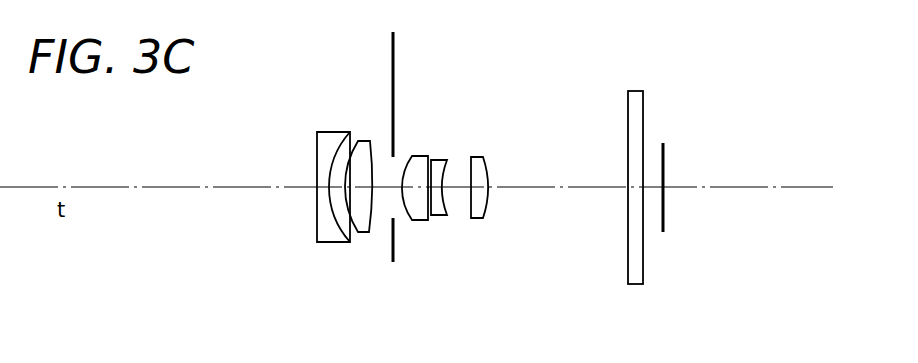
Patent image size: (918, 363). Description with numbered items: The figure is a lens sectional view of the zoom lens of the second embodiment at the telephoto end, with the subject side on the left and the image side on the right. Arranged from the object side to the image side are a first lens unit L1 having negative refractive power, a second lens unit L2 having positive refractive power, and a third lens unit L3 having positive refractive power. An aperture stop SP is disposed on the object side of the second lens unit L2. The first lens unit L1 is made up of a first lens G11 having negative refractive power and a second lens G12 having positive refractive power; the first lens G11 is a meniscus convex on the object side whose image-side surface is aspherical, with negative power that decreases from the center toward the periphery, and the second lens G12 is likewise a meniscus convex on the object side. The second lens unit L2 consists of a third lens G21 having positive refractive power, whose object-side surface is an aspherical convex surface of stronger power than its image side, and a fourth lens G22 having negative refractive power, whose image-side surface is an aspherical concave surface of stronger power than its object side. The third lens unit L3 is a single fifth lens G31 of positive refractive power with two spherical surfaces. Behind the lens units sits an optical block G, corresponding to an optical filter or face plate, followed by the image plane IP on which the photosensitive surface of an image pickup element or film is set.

The first lens unit L1 is at (382, 125).
The second lens unit L2 is at (398, 148).
The third lens unit L3 is at (463, 148).
The first lens G11 is at (333, 243).
The second lens G12 is at (367, 233).
The third lens G21 is at (417, 221).
The fourth lens G22 is at (437, 215).
The fifth lens G31 is at (482, 219).
The aperture stop SP is at (392, 61).
The optical block G is at (635, 92).
The image plane IP is at (665, 158).